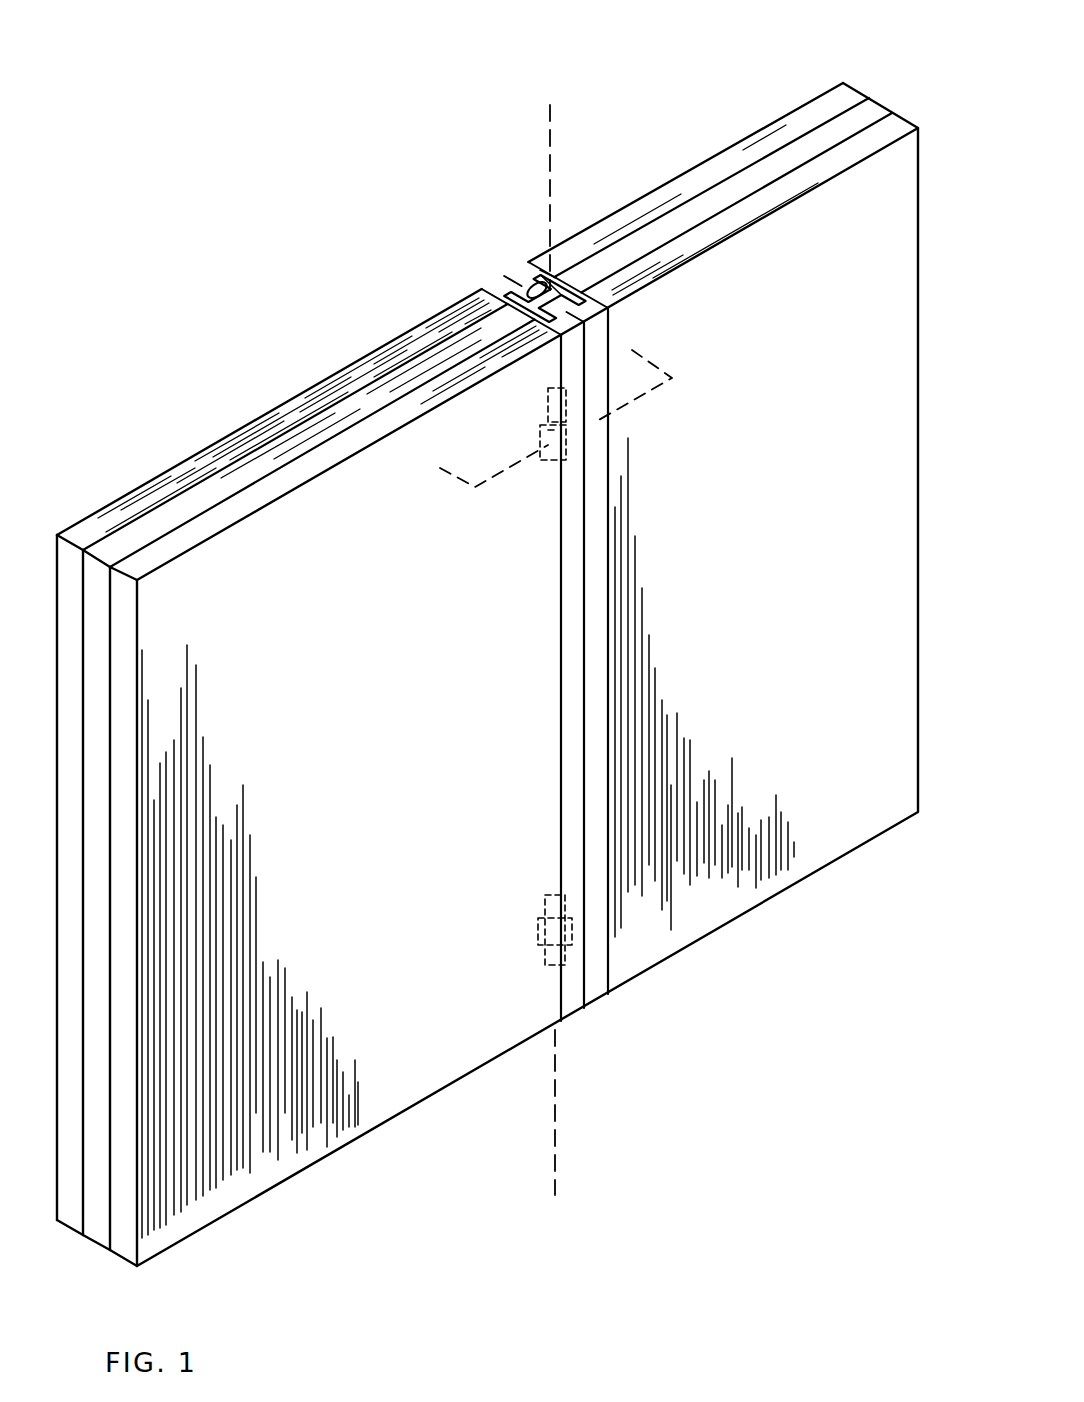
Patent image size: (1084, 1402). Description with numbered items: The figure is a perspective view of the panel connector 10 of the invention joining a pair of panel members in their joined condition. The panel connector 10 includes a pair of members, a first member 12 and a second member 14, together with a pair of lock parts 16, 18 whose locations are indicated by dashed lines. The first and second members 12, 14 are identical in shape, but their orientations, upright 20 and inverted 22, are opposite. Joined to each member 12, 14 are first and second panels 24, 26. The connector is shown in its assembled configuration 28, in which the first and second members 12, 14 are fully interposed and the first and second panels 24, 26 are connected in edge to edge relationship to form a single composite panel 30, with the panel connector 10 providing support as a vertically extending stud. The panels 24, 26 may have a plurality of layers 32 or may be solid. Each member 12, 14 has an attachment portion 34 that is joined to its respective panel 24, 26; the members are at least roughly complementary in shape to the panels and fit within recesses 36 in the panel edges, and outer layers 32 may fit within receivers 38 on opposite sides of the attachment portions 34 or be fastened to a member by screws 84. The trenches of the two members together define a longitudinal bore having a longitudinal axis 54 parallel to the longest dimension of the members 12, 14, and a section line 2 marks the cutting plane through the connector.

The section line 2- 2 is at (432, 462).
The panel connector 10 is at (517, 212).
The first member 12 is at (492, 296).
The second member 14 is at (523, 270).
The lock part 16 is at (548, 392).
The lock part 18 is at (548, 963).
The upright orientation 20 is at (583, 1012).
The inverted orientation 22 is at (610, 990).
The first panel 24 is at (292, 1182).
The second panel 26 is at (860, 845).
The assembled configuration 28 is at (743, 139).
The composite panel 30 is at (223, 1217).
The layers 32 is at (878, 121).
The attachment portion 34 is at (562, 278).
The recess 36 is at (490, 304).
The receiver 38 is at (548, 268).
The longitudinal axis 54 is at (551, 120).
The screws 84 is at (528, 438).